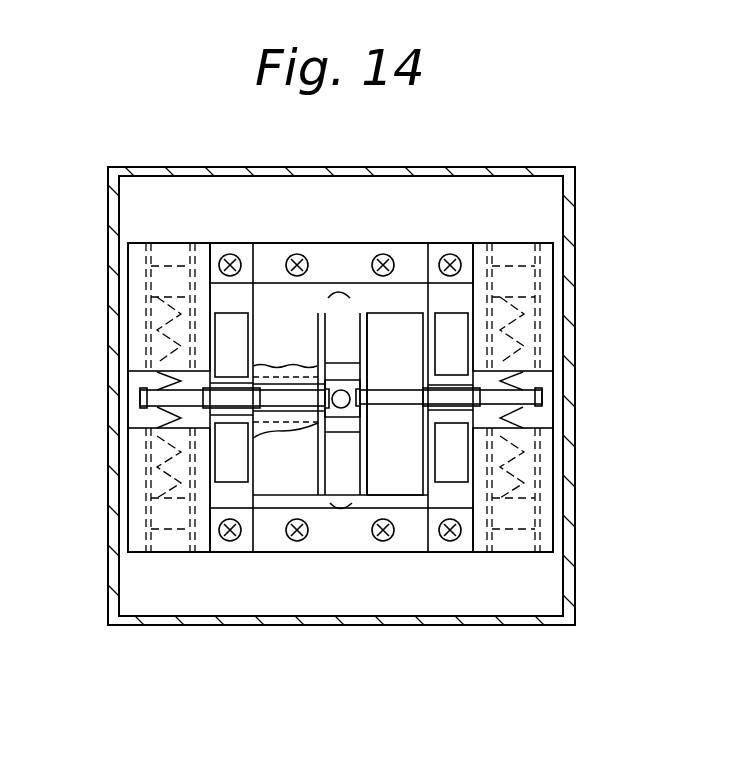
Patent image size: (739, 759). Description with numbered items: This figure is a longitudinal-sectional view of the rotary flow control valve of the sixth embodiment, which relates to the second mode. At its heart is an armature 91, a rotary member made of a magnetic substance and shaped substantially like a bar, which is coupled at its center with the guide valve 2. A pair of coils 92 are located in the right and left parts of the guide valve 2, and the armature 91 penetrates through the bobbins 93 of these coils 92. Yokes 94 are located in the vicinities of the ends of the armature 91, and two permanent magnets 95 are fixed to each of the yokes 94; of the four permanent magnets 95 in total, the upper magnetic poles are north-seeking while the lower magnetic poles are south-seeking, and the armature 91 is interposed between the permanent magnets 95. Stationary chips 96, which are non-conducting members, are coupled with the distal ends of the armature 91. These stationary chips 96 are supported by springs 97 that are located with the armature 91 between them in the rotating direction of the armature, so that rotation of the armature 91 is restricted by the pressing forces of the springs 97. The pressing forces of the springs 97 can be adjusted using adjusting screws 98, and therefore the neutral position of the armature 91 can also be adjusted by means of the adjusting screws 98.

The guide valve 2 is at (333, 420).
The armature 91 is at (347, 413).
The coils 92 is at (283, 503).
The bobbins 93 is at (265, 432).
The yokes 94 is at (210, 293).
The permanent magnets 95 is at (242, 313).
The stationary chips 96 is at (140, 398).
The springs 97 is at (157, 383).
The adjusting screws 98 is at (145, 290).